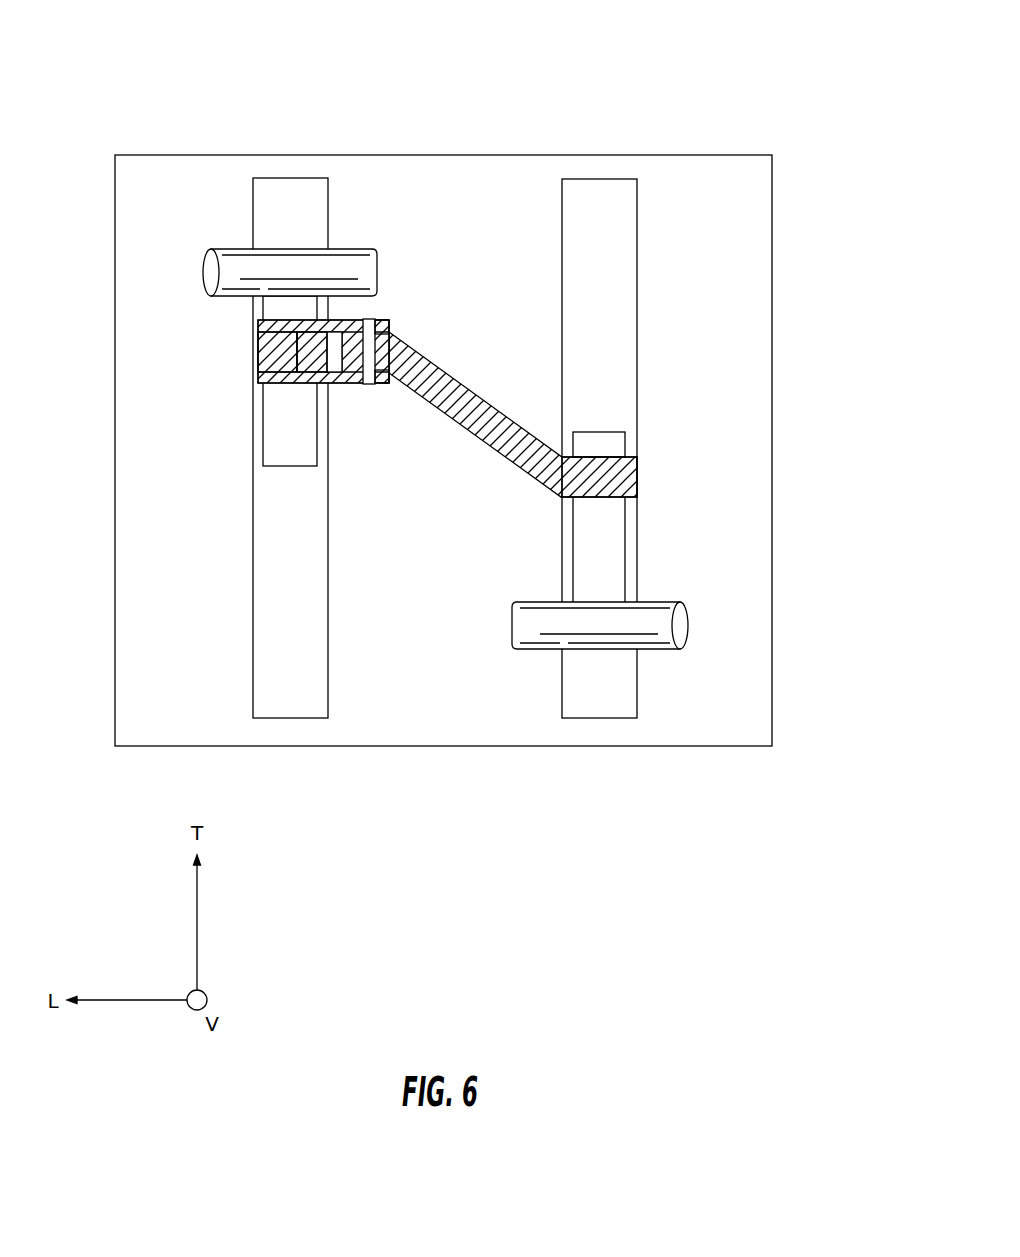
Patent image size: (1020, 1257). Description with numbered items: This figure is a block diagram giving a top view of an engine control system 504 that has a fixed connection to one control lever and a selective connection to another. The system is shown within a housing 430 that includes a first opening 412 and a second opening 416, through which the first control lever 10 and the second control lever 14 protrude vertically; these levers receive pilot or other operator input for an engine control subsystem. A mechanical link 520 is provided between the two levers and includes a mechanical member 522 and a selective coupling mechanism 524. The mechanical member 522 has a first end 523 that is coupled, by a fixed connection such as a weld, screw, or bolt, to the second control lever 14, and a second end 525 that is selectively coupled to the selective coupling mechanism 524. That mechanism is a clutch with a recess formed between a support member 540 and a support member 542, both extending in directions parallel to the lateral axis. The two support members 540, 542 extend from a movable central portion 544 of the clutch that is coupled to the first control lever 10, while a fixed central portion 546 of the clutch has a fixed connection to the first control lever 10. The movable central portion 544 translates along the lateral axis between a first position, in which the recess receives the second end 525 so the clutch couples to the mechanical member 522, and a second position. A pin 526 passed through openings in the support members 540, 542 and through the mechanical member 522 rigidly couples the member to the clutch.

The engine control system 504 is at (829, 105).
The housing 430 is at (772, 445).
The first opening 412 is at (328, 218).
The second opening 416 is at (637, 203).
The first control lever 10 is at (285, 232).
The second control lever 14 is at (606, 661).
The mechanical link 520 is at (434, 403).
The mechanical member 522 is at (485, 383).
The first end 523 is at (655, 447).
The second end 525 is at (402, 345).
The selective coupling mechanism 524 is at (315, 384).
The movable central portion 544 is at (278, 360).
The fixed central portion 546 is at (317, 352).
The pin 526 is at (368, 321).
The support member 540 is at (385, 330).
The support member 542 is at (382, 384).